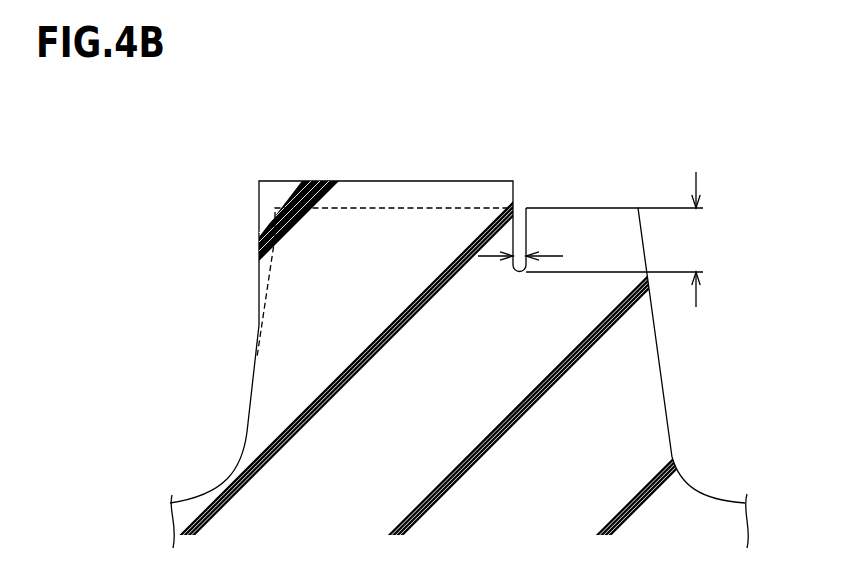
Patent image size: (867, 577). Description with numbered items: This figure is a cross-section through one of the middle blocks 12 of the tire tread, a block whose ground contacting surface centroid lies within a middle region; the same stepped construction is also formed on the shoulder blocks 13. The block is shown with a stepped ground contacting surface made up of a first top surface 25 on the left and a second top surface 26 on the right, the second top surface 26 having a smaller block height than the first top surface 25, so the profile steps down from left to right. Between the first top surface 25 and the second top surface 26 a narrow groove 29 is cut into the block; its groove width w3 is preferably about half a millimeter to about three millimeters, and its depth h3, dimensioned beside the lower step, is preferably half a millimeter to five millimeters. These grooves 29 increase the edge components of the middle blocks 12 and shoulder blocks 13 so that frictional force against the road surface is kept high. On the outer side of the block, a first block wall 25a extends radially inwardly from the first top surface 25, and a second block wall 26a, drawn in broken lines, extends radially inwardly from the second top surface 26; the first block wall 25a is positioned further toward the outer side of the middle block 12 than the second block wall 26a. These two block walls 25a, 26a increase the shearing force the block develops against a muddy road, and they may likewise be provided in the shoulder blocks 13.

The middle block 12 is at (518, 306).
The shoulder block 13 is at (290, 180).
The first top surface 25 is at (387, 180).
The first block wall 25a is at (258, 216).
The second top surface 26 is at (591, 207).
The second block wall 26a is at (267, 267).
The groove 29 is at (521, 206).
The groove width w3 is at (517, 262).
The depth h3 is at (618, 239).